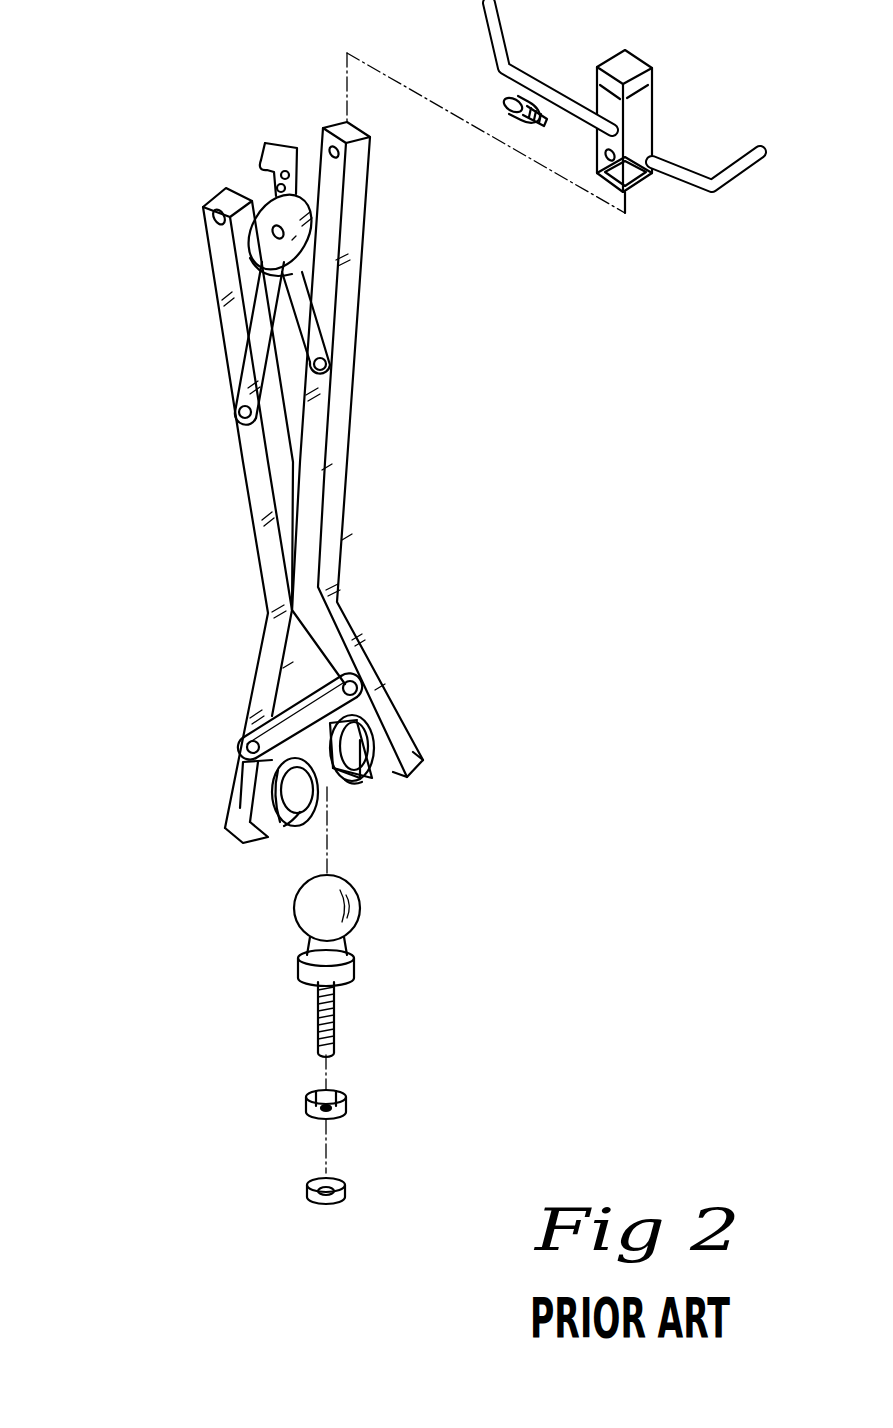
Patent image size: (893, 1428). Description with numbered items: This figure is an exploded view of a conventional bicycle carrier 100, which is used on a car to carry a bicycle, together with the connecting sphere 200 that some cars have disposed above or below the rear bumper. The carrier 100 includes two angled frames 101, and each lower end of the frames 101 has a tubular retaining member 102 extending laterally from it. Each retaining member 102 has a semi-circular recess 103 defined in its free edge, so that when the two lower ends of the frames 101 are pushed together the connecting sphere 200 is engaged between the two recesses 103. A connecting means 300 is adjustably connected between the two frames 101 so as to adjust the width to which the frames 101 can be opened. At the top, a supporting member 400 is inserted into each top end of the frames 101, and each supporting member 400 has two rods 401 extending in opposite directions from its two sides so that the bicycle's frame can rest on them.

The bicycle carrier 100 is at (190, 544).
The angled frame 101 is at (358, 403).
The tubular retaining member 102 is at (256, 800).
The semi-circular recess 103 is at (290, 815).
The connecting sphere 200 is at (300, 915).
The connecting means 300 is at (257, 193).
The supporting member 400 is at (665, 62).
The rod 401 is at (688, 176).